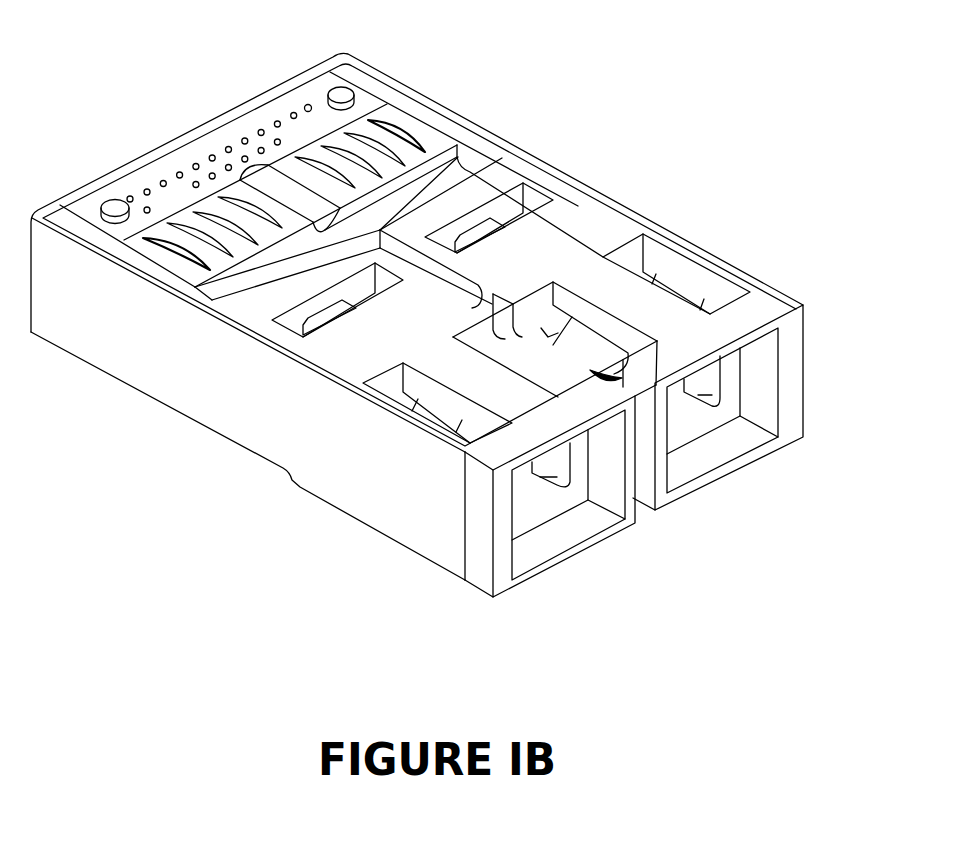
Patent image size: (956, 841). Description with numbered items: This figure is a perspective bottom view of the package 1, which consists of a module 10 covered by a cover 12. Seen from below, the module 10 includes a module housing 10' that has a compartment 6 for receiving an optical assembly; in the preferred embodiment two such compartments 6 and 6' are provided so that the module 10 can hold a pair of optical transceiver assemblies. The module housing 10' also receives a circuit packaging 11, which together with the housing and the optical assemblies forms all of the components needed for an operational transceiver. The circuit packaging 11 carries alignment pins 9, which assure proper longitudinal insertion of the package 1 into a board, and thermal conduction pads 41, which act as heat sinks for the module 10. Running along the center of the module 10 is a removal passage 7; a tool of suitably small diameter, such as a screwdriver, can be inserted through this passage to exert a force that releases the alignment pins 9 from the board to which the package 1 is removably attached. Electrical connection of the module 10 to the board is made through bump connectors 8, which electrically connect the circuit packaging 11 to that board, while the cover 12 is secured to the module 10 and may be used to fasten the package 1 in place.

The package 1 is at (798, 270).
The compartment 6 is at (324, 330).
The compartment 6' is at (515, 192).
The removal passage 7 is at (458, 278).
The bump connectors 8 is at (190, 157).
The alignment pins 9 is at (113, 207).
The module 10 is at (540, 439).
The module housing 10' is at (736, 372).
The circuit packaging 11 is at (308, 104).
The cover 12 is at (375, 510).
The thermal conduction pads 41 is at (402, 132).